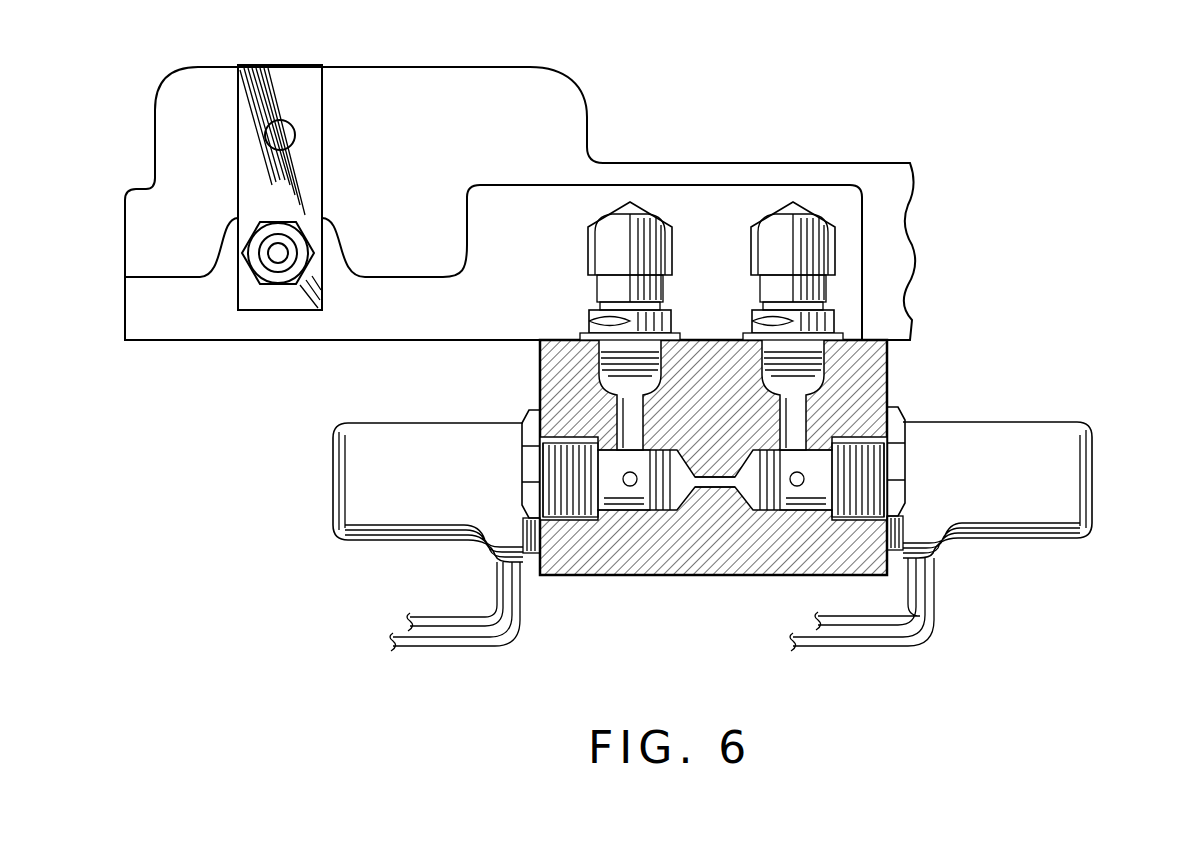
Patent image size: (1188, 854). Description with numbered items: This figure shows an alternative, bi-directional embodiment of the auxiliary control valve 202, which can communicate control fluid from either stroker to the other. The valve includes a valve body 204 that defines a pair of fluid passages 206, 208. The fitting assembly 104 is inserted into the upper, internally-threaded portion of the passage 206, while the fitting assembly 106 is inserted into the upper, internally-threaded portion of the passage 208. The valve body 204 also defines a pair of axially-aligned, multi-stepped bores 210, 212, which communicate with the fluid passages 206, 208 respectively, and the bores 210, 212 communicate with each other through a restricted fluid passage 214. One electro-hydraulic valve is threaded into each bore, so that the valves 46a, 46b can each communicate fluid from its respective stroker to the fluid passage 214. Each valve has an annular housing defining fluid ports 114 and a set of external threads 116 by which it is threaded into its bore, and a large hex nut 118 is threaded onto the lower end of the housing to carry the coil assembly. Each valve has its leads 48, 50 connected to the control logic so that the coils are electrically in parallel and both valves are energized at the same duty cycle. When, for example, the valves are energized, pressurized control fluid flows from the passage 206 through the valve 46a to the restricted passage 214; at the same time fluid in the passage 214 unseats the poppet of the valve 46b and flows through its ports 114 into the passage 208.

The electro-hydraulic valve 46a is at (318, 449).
The electro-hydraulic valve 46b is at (1124, 439).
The lead 48 is at (447, 617).
The lead 50 is at (468, 648).
The fitting assembly 104 is at (550, 283).
The fitting assembly 106 is at (740, 290).
The fluid port 114 is at (626, 473).
The external threads 116 is at (566, 500).
The hex nut 118 is at (535, 420).
The auxiliary control valve 202 is at (750, 474).
The valve body 204 is at (708, 576).
The fluid passage 206 is at (645, 395).
The fluid passage 208 is at (805, 413).
The multi-stepped bore 210 is at (627, 512).
The multi-stepped bore 212 is at (800, 515).
The restricted fluid passage 214 is at (712, 477).